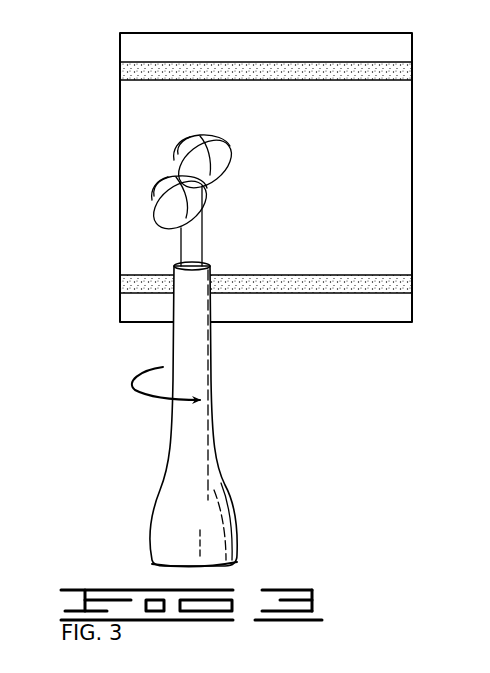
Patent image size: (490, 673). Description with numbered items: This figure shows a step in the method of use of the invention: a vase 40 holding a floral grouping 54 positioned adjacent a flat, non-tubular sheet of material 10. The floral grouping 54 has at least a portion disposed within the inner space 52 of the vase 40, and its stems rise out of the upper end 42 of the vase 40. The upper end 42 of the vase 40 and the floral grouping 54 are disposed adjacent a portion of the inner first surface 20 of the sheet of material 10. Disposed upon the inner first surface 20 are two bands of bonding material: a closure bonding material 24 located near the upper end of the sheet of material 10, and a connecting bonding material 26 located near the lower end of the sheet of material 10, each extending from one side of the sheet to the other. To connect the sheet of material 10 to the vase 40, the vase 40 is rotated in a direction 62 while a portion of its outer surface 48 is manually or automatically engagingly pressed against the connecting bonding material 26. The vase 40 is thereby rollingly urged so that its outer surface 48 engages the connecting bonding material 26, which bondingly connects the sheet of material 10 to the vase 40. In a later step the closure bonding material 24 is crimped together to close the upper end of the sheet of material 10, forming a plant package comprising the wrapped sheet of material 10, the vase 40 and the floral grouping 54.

The sheet of material 10 is at (89, 86).
The inner first surface 20 is at (135, 154).
The closure bonding material 24 is at (393, 70).
The connecting bonding material 26 is at (395, 284).
The vase 40 is at (178, 399).
The upper end 42 is at (175, 264).
The outer surface 48 is at (214, 456).
The inner space 52 is at (193, 264).
The floral grouping 54 is at (222, 197).
The direction 62 is at (133, 391).